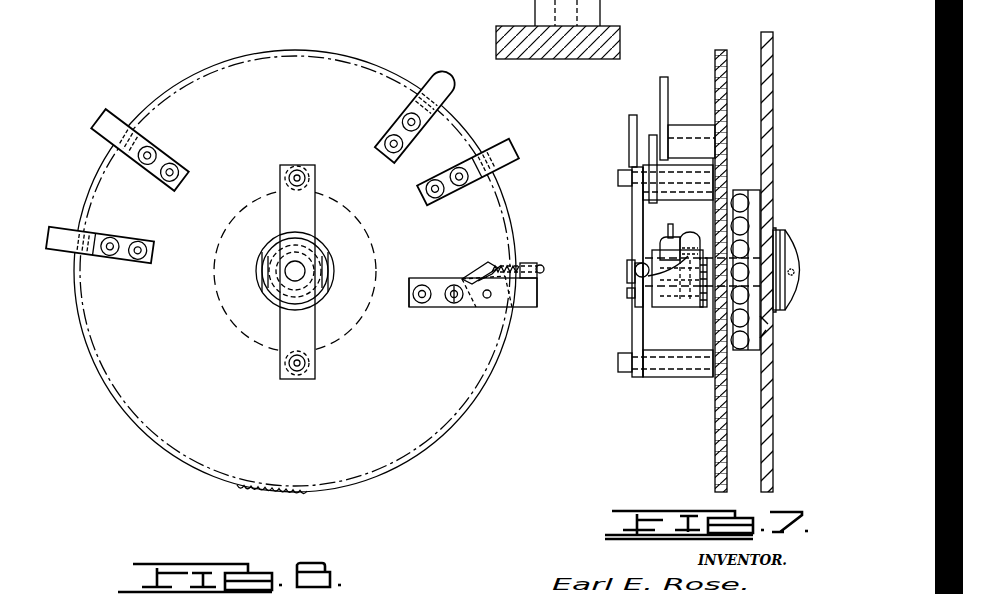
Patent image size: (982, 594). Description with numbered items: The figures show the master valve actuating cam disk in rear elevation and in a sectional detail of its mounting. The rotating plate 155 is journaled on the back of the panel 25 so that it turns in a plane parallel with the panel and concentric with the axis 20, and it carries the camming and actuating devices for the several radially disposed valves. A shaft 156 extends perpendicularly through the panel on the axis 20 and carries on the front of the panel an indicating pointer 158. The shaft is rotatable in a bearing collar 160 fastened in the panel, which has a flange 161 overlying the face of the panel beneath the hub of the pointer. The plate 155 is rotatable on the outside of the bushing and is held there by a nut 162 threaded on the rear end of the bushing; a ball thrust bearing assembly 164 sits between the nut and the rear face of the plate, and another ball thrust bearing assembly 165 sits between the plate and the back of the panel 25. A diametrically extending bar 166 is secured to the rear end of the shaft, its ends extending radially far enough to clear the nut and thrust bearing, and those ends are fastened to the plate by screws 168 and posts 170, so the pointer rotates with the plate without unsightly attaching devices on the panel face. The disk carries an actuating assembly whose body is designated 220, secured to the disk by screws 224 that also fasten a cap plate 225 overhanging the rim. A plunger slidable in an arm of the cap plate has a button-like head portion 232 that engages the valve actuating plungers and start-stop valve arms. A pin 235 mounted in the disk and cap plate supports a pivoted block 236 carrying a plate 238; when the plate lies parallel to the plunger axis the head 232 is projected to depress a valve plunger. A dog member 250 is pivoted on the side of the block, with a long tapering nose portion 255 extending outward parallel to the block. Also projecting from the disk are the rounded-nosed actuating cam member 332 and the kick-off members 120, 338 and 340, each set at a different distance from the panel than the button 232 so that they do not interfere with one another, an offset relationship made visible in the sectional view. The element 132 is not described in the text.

In FIG. 6, the axis 20 is at (292, 273).
In FIG. 7, the panel 25 is at (772, 58).
In FIG. 6, the kick-off member 120 is at (105, 125).
In FIG. 7, the kick-off member 120 is at (628, 128).
In FIG. 6, the support block 132 is at (610, 26).
In FIG. 6, the plate 155 is at (278, 49).
In FIG. 7, the plate 155 is at (723, 50).
In FIG. 7, the shaft 156 is at (801, 252).
In FIG. 7, the pointer 158 is at (773, 318).
In FIG. 7, the bearing collar 160 is at (770, 332).
In FIG. 7, the flange 161 is at (778, 230).
In FIG. 6, the nut 162 is at (316, 255).
In FIG. 7, the nut 162 is at (660, 246).
In FIG. 7, the ball thrust bearing assembly 164 is at (689, 233).
In FIG. 6, the ball thrust bearing assembly 165 is at (238, 324).
In FIG. 7, the ball thrust bearing assembly 165 is at (740, 189).
In FIG. 6, the bar 166 is at (306, 205).
In FIG. 7, the bar 166 is at (632, 209).
In FIG. 6, the screws 168 is at (300, 172).
In FIG. 7, the screws 168 is at (618, 177).
In FIG. 7, the posts 170 is at (657, 377).
In FIG. 6, the actuating assembly body 220 is at (430, 278).
In FIG. 6, the screws 224 is at (420, 303).
In FIG. 6, the cap plate 225 is at (525, 311).
In FIG. 7, the cap plate 225 is at (640, 300).
In FIG. 6, the head portion 232 is at (545, 269).
In FIG. 7, the head portion 232 is at (636, 274).
In FIG. 6, the pin 235 is at (487, 300).
In FIG. 6, the pivoted block 236 is at (470, 303).
In FIG. 7, the pivoted block 236 is at (650, 306).
In FIG. 6, the plate 238 is at (480, 264).
In FIG. 6, the dog member 250 is at (484, 262).
In FIG. 7, the dog member 250 is at (670, 308).
In FIG. 6, the nose portion 255 is at (523, 264).
In FIG. 7, the nose portion 255 is at (704, 309).
In FIG. 6, the actuating cam member 332 is at (448, 70).
In FIG. 7, the actuating cam member 332 is at (664, 77).
In FIG. 6, the kick-off member 338 is at (514, 136).
In FIG. 7, the kick-off member 338 is at (650, 134).
In FIG. 6, the kick-off member 340 is at (58, 228).
In FIG. 7, the kick-off member 340 is at (660, 222).